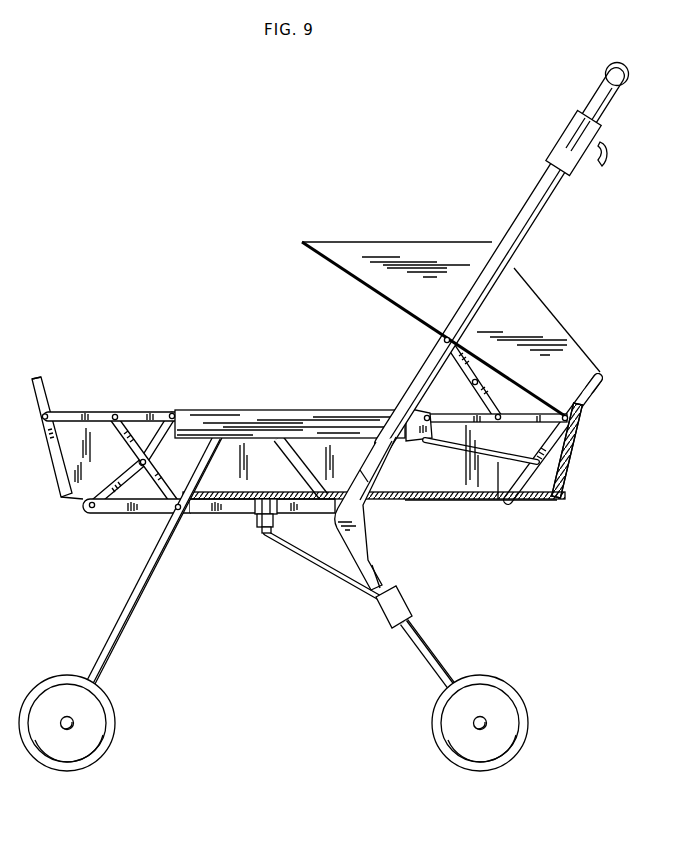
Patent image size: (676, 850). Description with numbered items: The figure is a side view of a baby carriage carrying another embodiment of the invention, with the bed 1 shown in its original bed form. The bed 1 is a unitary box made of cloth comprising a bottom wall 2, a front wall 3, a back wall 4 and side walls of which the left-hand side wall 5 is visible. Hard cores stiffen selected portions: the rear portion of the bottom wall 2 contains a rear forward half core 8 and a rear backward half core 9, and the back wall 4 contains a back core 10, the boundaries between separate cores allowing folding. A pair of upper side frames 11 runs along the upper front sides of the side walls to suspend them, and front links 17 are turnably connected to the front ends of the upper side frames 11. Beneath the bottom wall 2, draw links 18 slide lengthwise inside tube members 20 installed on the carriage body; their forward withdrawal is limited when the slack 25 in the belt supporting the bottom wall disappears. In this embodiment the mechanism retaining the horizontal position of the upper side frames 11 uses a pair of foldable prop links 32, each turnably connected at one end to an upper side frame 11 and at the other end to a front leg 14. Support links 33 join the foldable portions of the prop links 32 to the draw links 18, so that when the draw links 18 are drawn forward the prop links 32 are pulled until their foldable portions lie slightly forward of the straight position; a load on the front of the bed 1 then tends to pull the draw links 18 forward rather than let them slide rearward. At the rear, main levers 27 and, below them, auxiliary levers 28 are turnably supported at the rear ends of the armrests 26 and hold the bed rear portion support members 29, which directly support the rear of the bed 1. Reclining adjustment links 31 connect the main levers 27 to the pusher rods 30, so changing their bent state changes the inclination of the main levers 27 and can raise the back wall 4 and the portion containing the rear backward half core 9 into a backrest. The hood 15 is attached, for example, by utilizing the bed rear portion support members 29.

The baby carriage bed 1 is at (415, 510).
The bottom wall 2 is at (72, 493).
The front wall 3 is at (50, 457).
The back wall 4 is at (572, 463).
The left-hand side wall 5 is at (230, 447).
The rear forward half core 8 is at (245, 495).
The rear backward half core 9 is at (474, 498).
The back core 10 is at (578, 433).
The upper side frames 11 is at (79, 412).
The front leg 14 is at (141, 582).
The hood 15 is at (375, 247).
The front links 17 is at (40, 381).
The draw links 18 is at (133, 512).
The tube members 20 is at (222, 512).
The slack 25 is at (142, 497).
The armrests 26 is at (295, 418).
The main levers 27 is at (445, 417).
The auxiliary levers 28 is at (506, 503).
The bed rear portion support members 29 is at (597, 386).
The pusher rods 30 is at (541, 209).
The reclining adjustment links 31 is at (470, 362).
The prop links 32 is at (135, 435).
The support links 33 is at (114, 505).